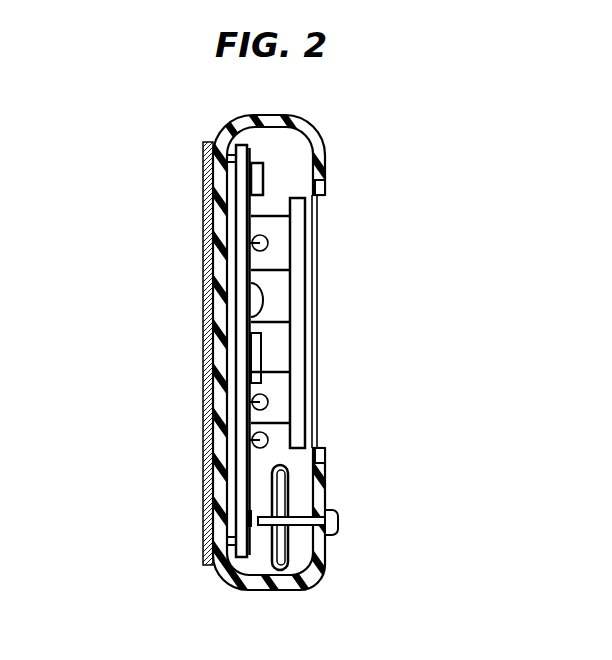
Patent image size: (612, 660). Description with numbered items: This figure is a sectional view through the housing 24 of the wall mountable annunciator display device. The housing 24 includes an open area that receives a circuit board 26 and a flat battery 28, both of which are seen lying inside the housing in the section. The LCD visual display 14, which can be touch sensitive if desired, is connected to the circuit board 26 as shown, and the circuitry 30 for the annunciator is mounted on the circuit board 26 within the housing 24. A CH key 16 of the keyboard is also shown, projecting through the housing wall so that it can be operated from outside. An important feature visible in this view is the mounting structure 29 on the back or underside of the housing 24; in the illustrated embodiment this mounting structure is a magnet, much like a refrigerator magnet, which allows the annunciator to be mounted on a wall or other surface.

The LCD visual display 14 is at (300, 257).
The CH key 16 is at (340, 520).
The housing 24 is at (298, 118).
The circuit board 26 is at (240, 493).
The flat battery 28 is at (283, 474).
The mounting structure 29 is at (203, 350).
The circuitry 30 is at (261, 140).